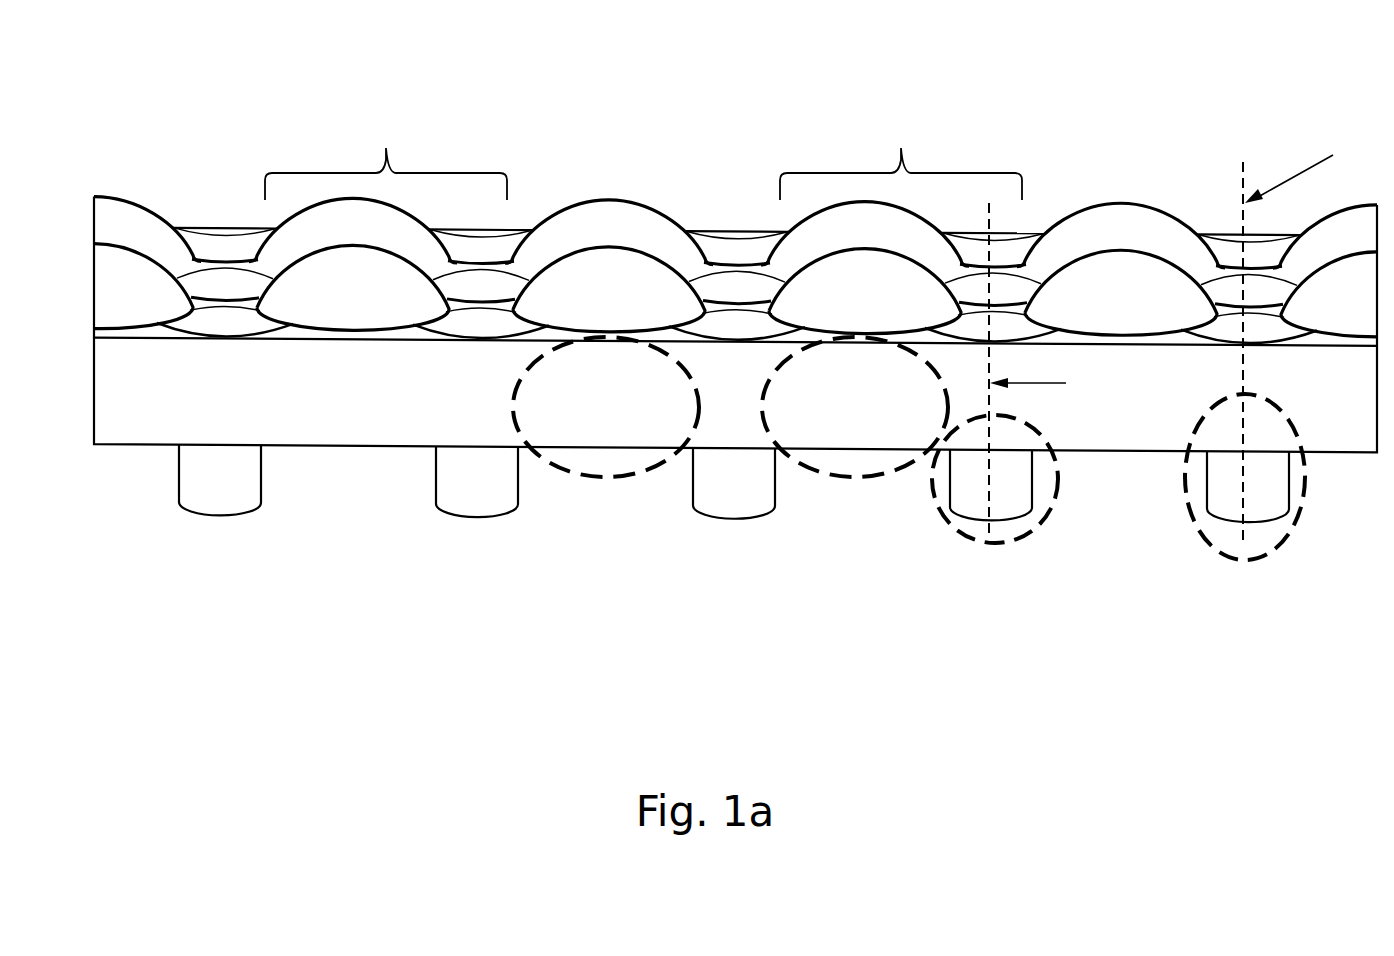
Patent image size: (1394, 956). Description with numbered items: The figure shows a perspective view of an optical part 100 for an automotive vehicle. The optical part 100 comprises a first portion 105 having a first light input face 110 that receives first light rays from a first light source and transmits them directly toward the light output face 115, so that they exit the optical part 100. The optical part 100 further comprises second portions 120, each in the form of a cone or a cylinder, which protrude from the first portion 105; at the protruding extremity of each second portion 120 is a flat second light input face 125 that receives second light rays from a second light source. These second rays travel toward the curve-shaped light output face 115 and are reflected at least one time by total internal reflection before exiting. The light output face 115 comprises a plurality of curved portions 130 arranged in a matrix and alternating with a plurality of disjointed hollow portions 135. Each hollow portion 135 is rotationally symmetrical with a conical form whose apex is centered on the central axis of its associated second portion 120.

The optical part 100 is at (735, 353).
The first portion 105 is at (613, 496).
The first light input face 110 is at (564, 462).
The light output face 115 is at (453, 145).
The second portion 120 is at (1038, 550).
The second light input face 125 is at (973, 535).
The curved portions 130 is at (323, 184).
The hollow portions 135 is at (481, 221).